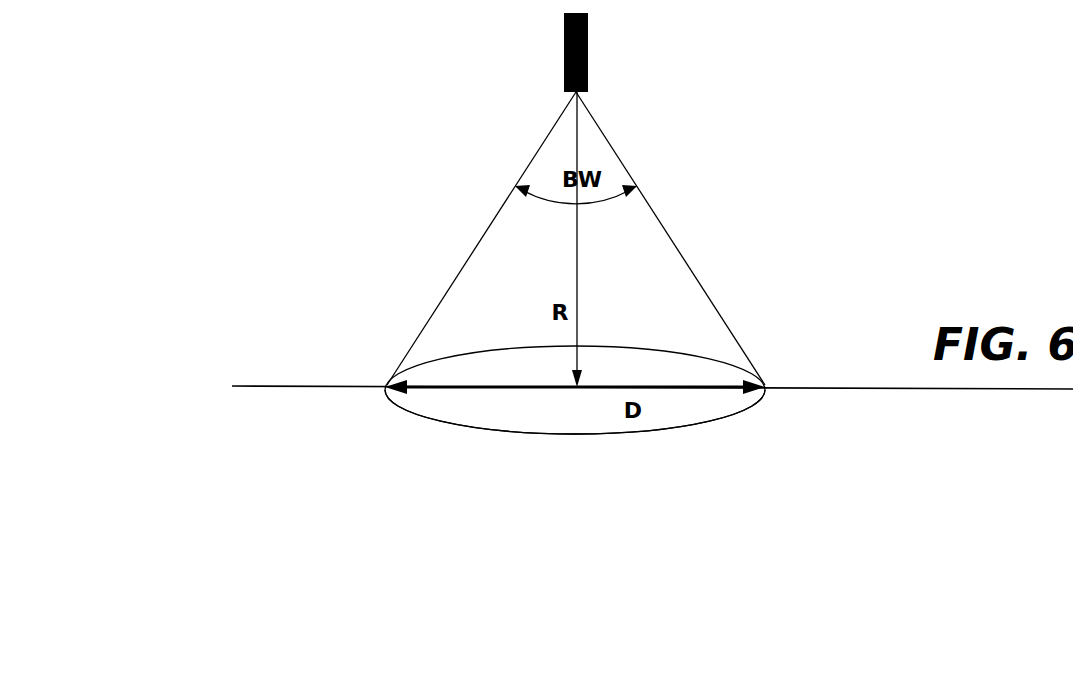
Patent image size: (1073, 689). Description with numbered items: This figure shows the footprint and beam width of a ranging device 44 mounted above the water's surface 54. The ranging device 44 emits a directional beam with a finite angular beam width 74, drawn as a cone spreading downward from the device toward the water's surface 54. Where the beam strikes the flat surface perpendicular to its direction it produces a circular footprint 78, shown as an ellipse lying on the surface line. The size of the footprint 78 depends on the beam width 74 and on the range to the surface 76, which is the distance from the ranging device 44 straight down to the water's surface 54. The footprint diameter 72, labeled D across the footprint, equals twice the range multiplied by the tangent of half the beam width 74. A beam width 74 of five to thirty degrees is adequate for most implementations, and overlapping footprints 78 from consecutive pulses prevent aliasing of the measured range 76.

The ranging device 44 is at (564, 50).
The water's surface 54 is at (279, 383).
The footprint diameter 72 is at (487, 405).
The beam width 74 is at (525, 213).
The range to the surface 76 is at (600, 285).
The footprint 78 is at (602, 436).